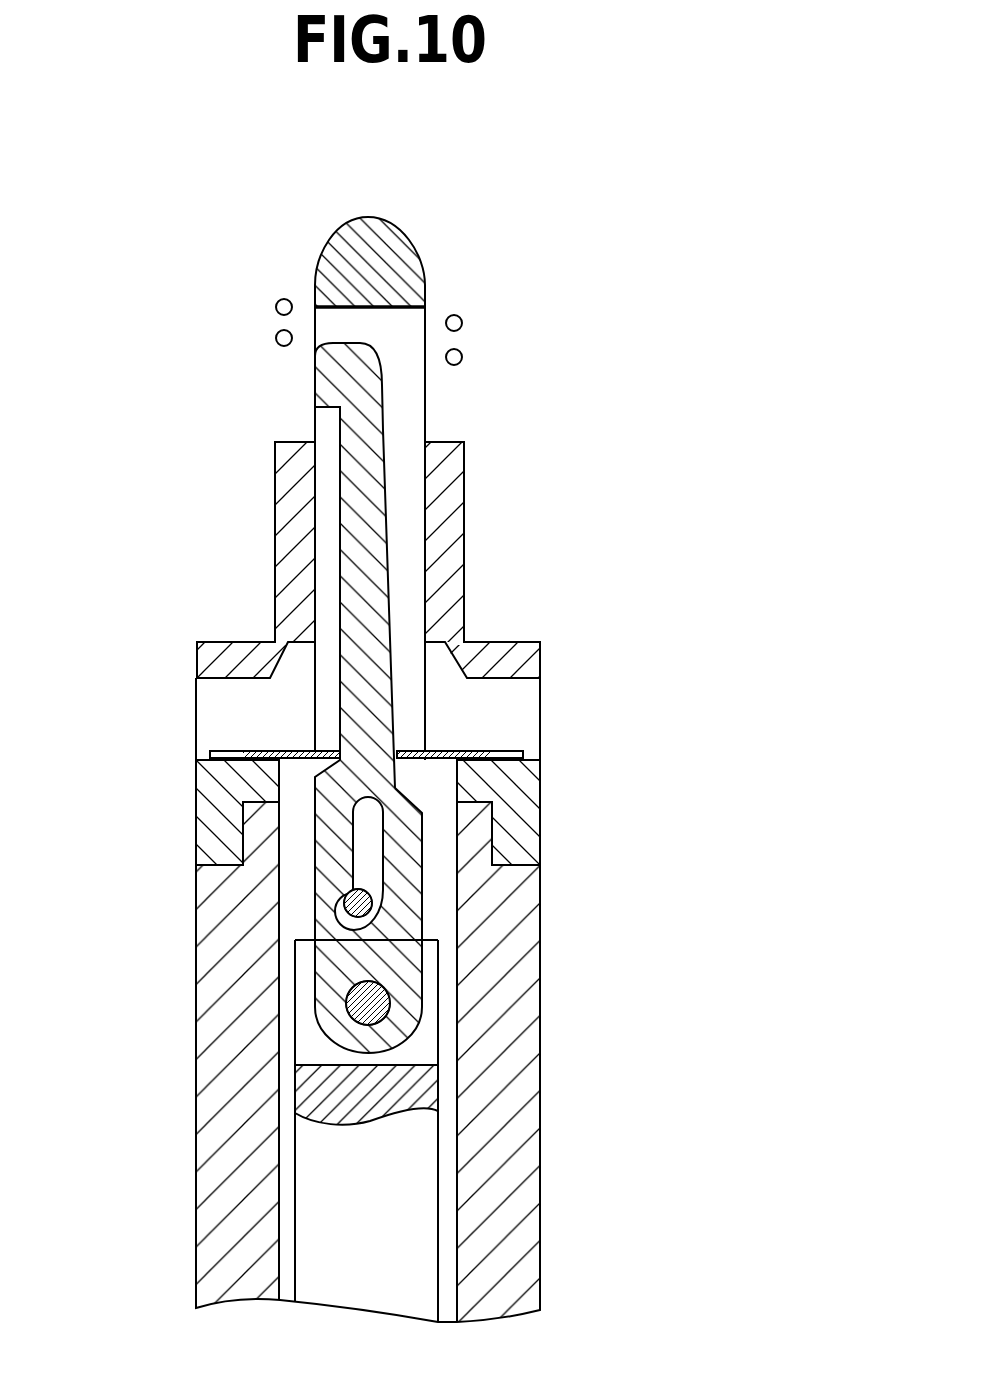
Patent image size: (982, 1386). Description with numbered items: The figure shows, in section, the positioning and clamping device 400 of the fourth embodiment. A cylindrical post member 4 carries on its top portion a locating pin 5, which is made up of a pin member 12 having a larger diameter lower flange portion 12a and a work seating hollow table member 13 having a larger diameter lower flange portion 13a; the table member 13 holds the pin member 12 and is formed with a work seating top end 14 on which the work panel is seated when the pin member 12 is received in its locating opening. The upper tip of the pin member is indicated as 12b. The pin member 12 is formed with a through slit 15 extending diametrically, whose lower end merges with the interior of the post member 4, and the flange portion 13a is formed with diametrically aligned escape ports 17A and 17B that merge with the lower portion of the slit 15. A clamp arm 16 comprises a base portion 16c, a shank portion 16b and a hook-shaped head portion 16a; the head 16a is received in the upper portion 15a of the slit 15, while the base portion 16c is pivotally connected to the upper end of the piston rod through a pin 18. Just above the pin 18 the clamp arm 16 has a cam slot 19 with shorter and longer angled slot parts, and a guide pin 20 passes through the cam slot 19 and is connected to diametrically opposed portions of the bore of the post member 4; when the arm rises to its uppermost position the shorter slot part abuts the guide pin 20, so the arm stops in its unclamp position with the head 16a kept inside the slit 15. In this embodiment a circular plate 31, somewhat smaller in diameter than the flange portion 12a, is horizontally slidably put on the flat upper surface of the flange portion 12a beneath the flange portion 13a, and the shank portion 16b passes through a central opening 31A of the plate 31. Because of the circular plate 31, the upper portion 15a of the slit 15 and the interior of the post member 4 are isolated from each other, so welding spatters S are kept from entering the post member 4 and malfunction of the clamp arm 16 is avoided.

The positioning and clamping device 400 is at (698, 180).
The cylindrical post member 4 is at (196, 1033).
The locating pin 5 is at (315, 360).
The pin member 12 is at (335, 539).
The lower flange portion 12a is at (220, 798).
The tube tip 12b is at (337, 262).
The work seating hollow table member 13 is at (355, 560).
The lower flange portion 13a is at (217, 657).
The work seating top end 14 is at (290, 441).
The slit 15 is at (412, 482).
The upper portion of slit 15a is at (403, 322).
The clamp arm 16 is at (410, 698).
The hook-shaped head portion 16a is at (352, 372).
The shank portion 16b is at (358, 520).
The base portion 16c is at (403, 870).
The escape port 17A is at (217, 720).
The escape port 17B is at (510, 712).
The pin 18 is at (372, 1003).
The cam slot 19 is at (362, 834).
The guide pin 20 is at (345, 902).
The circular plate 31 is at (467, 752).
The opening 31A is at (376, 750).
The spatters S is at (276, 307).